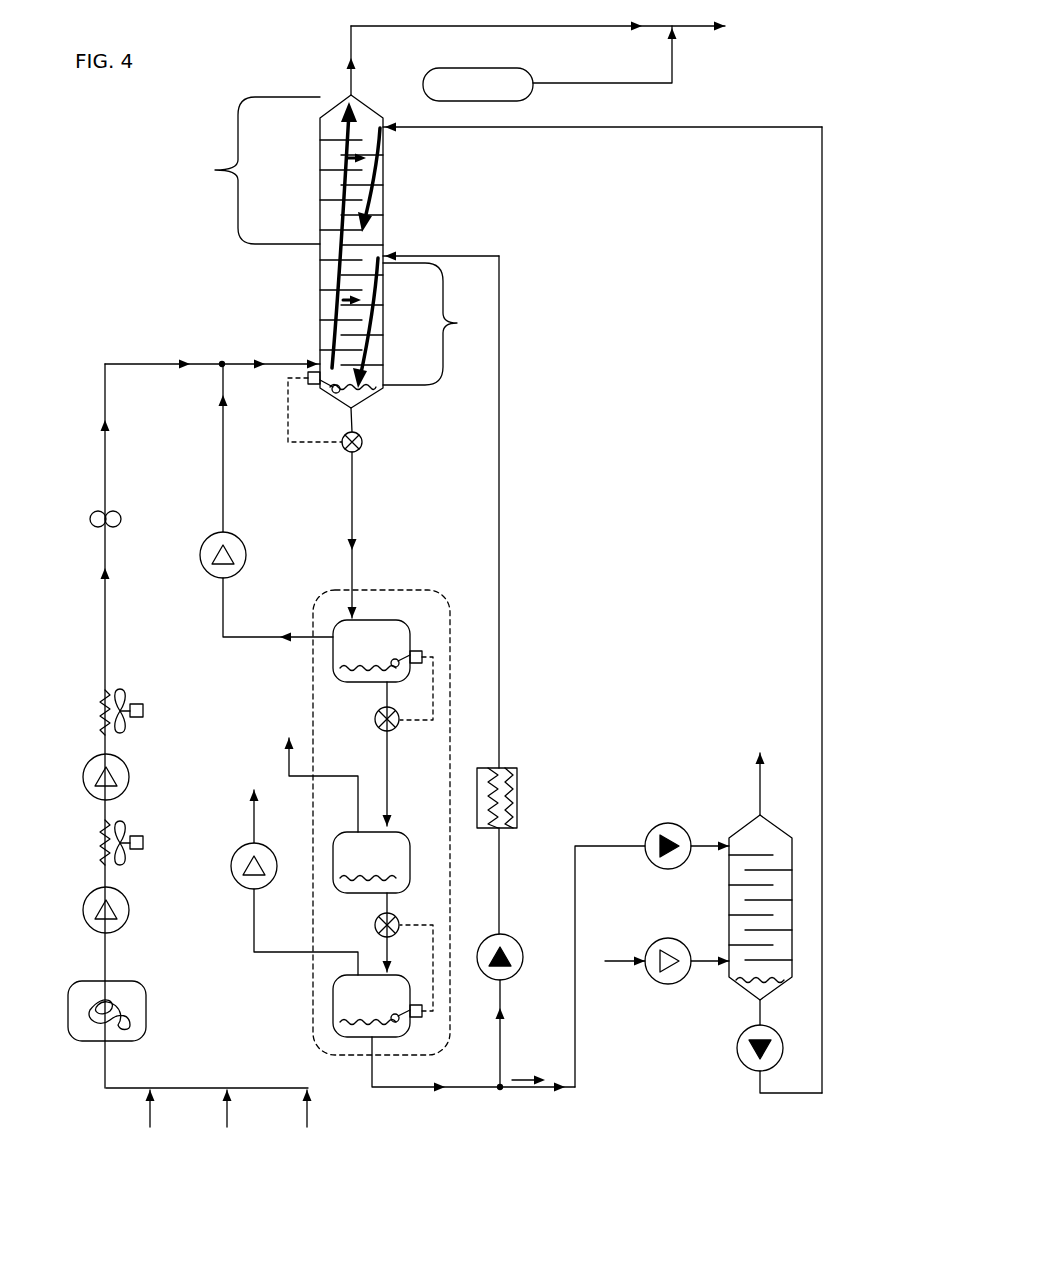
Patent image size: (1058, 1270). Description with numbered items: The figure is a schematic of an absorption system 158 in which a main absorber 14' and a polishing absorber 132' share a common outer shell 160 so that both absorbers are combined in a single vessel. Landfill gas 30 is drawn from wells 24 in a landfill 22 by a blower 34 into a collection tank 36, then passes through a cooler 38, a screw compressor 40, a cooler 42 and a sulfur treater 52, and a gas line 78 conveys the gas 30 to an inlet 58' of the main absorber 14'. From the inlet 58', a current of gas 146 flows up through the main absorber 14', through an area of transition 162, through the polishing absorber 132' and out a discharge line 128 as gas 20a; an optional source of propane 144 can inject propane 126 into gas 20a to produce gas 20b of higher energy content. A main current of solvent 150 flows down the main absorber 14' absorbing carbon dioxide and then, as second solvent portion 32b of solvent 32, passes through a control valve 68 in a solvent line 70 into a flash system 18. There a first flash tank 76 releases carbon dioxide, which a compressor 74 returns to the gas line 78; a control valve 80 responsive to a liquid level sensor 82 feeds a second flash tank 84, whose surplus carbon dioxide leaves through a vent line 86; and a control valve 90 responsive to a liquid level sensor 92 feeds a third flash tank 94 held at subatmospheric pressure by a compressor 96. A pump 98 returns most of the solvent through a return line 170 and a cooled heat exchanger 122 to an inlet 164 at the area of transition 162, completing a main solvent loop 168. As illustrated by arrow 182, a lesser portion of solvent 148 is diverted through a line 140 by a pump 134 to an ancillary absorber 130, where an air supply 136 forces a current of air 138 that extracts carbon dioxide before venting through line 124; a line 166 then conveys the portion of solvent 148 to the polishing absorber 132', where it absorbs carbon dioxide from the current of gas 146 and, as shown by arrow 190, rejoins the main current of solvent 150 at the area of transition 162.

The main absorber 14' is at (407, 251).
The flash system 18 is at (333, 590).
The gas 20a is at (637, 35).
The gas 20b is at (695, 30).
The landfill 22 is at (340, 1118).
The wells 24 is at (148, 1115).
The landfill gas 30 is at (262, 366).
The solvent 32 is at (762, 987).
The second solvent portion 32b is at (375, 870).
The blower 34 is at (84, 905).
The collection tank 36 is at (130, 981).
The cooler 38 is at (98, 845).
The screw compressor 40 is at (86, 797).
The cooler 42 is at (98, 710).
The sulfur treater 52 is at (122, 519).
The inlet 58' is at (271, 345).
The control valve 68 is at (342, 446).
The solvent line 70 is at (360, 500).
The compressor 74 is at (205, 570).
The first flash tank 76 is at (333, 656).
The gas line 78 is at (222, 362).
The control valve 80 is at (378, 727).
The liquid level sensor 82 is at (416, 652).
The second flash tank 84 is at (410, 865).
The vent line 86 is at (290, 740).
The control valve 90 is at (375, 922).
The liquid level sensor 92 is at (415, 1015).
The third flash tank 94 is at (333, 985).
The compressor 96 is at (233, 872).
The pump 98 is at (512, 940).
The heat exchanger 122 is at (517, 790).
The line 124 is at (765, 783).
The propane 126 is at (680, 60).
The discharge line 128 is at (528, 27).
The ancillary absorber 130 is at (729, 907).
The polishing absorber 132' is at (248, 170).
The pump 134 is at (662, 823).
The air supply 136 is at (648, 978).
The current of air 138 is at (722, 965).
The line 140 is at (577, 1057).
The source of propane 144 is at (488, 105).
The current of gas 146 is at (340, 140).
The portion of solvent 148 is at (385, 123).
The main current of solvent 150 is at (360, 315).
The absorption system 158 is at (130, 215).
The common outer shell 160 is at (320, 203).
The area of transition 162 is at (330, 252).
The inlet 164 is at (387, 253).
The line 166 is at (822, 478).
The main solvent loop 168 is at (368, 478).
The return line 170 is at (500, 483).
The arrow 182 is at (520, 1075).
The arrow 190 is at (392, 253).